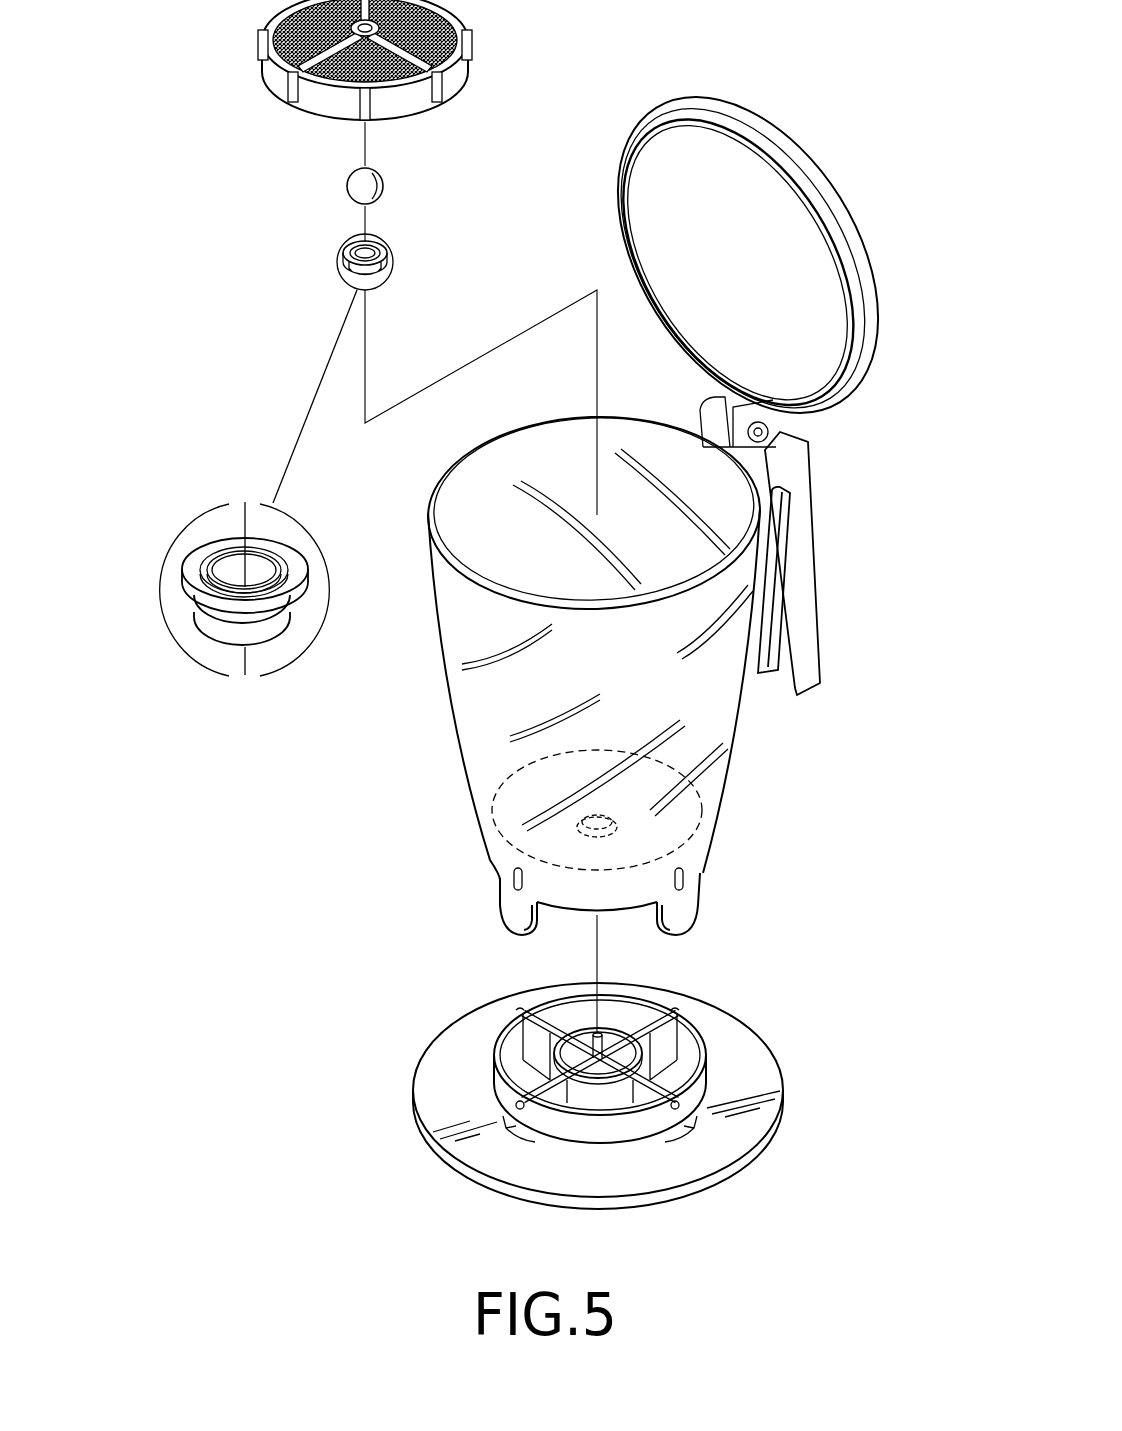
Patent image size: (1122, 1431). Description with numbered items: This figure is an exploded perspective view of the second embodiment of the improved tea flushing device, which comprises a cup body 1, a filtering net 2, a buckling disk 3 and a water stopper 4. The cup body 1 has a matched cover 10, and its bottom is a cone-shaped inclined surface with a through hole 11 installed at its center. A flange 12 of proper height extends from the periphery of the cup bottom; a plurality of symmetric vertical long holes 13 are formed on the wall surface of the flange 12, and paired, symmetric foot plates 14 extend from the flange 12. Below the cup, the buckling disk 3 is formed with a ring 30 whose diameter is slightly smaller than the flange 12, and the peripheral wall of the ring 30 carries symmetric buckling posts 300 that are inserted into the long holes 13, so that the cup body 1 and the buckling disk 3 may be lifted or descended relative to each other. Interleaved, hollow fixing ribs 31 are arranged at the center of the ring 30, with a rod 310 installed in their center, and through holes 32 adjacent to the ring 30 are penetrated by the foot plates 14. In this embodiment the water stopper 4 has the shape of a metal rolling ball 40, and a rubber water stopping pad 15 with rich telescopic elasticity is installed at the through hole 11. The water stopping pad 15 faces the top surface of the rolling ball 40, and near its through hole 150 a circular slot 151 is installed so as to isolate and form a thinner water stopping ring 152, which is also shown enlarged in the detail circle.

The cup body 1 is at (822, 730).
The filtering net 2 is at (504, 47).
The buckling disk 3 is at (849, 1099).
The water stopper 4 is at (416, 191).
The cover 10 is at (865, 327).
The through hole 11 is at (540, 822).
The flange 12 is at (572, 895).
The vertical long holes 13 is at (513, 876).
The foot plates 14 is at (513, 908).
The water stopping pad 15 is at (343, 275).
The ring 30 is at (497, 1092).
The fixing ribs 31 is at (537, 1042).
The through holes 32 is at (535, 1142).
The rolling ball 40 is at (350, 186).
The through hole 150 is at (257, 568).
The circular slot 151 is at (200, 573).
The water stopping ring 152 is at (220, 550).
The buckling posts 300 is at (516, 1011).
The rod 310 is at (596, 1033).